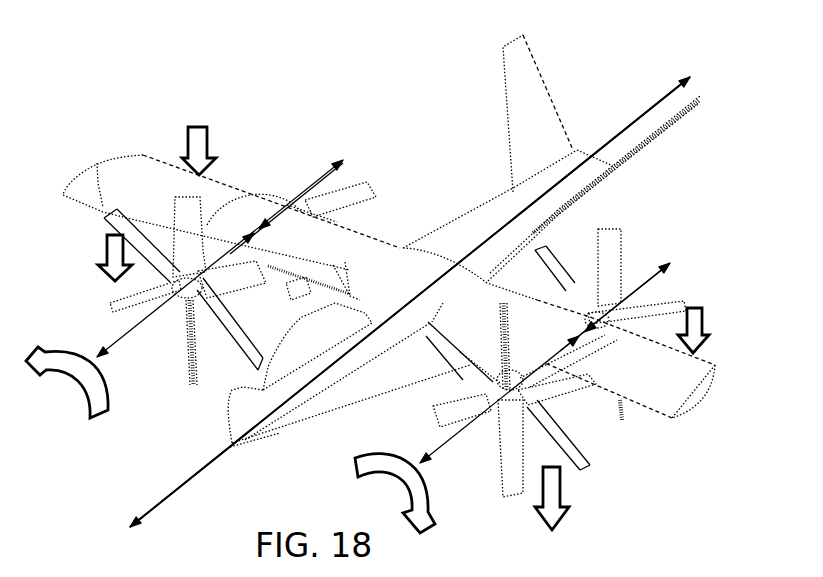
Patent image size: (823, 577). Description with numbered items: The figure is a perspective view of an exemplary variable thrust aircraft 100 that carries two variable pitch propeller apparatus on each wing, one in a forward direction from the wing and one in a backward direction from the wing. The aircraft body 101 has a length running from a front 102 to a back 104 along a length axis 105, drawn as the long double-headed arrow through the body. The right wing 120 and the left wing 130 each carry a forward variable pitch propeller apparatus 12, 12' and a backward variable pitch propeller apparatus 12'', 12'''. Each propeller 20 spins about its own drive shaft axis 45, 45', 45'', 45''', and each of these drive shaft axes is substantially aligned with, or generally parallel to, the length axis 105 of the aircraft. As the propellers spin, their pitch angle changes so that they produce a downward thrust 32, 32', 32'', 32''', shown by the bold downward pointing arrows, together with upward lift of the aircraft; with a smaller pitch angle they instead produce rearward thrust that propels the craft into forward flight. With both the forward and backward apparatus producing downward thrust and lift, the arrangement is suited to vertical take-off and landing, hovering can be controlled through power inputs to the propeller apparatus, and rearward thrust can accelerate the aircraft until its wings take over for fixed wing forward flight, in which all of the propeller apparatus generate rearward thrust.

The variable thrust aircraft 100 is at (250, 112).
The aircraft body 101 is at (452, 240).
The front 102 is at (233, 443).
The back 104 is at (576, 150).
The length axis 105 is at (182, 485).
The right wing 120 is at (110, 165).
The left wing 130 is at (674, 396).
The propeller 20 is at (100, 163).
The variable pitch propeller apparatus 12 is at (185, 292).
The variable pitch propeller apparatus 12' is at (521, 420).
The backward variable pitch propeller apparatus 12'' is at (291, 204).
The backward variable pitch propeller apparatus 12''' is at (630, 273).
The downward thrust 32 is at (92, 257).
The downward thrust 32' is at (576, 498).
The downward thrust 32'' is at (181, 135).
The downward thrust 32''' is at (725, 330).
The drive shaft axis 45 is at (184, 289).
The drive shaft axis 45' is at (512, 398).
The drive shaft axis 45'' is at (286, 178).
The drive shaft axis 45''' is at (614, 272).